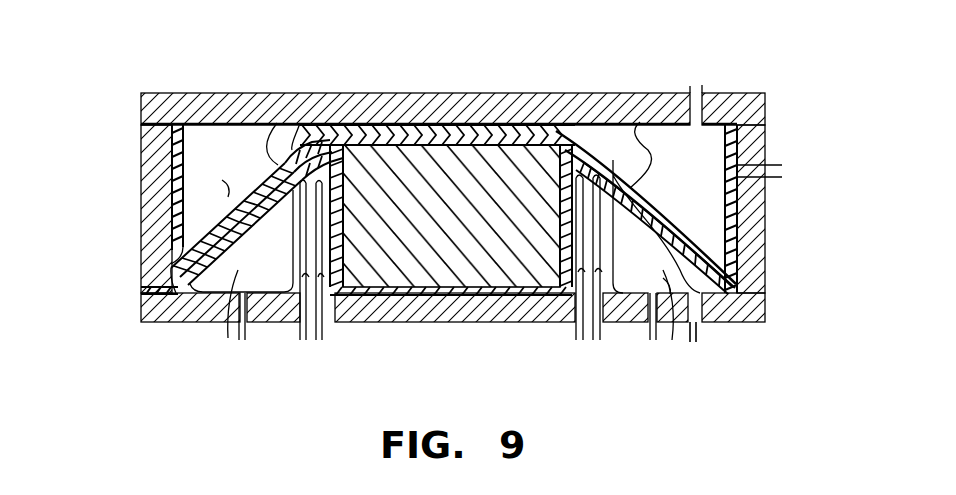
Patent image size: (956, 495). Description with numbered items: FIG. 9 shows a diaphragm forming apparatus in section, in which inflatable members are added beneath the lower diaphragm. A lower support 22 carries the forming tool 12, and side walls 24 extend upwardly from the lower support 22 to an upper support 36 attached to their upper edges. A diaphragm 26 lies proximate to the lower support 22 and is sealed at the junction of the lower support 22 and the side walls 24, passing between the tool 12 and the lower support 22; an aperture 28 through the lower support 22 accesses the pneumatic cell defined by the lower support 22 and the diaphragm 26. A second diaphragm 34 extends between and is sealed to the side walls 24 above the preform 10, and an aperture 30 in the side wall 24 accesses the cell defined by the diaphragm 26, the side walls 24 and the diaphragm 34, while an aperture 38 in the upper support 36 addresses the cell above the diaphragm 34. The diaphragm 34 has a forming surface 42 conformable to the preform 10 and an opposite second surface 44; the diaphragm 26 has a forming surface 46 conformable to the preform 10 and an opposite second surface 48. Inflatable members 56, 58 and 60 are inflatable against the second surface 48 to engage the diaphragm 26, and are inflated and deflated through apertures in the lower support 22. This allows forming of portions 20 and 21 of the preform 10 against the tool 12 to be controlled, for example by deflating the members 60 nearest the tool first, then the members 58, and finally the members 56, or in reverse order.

The preform 10 is at (425, 122).
The forming tool 12 is at (508, 172).
The portion of preform 20 is at (280, 122).
The portion of preform 21 is at (641, 122).
The lower support 22 is at (727, 324).
The side walls 24 is at (148, 203).
The diaphragm 26 is at (200, 328).
The aperture 28 is at (703, 344).
The aperture 30 is at (782, 172).
The diaphragm 34 is at (227, 194).
The upper support 36 is at (366, 93).
The aperture 38 is at (694, 85).
The forming surface 42 is at (665, 223).
The second surface 44 is at (662, 193).
The forming surface 46 is at (700, 246).
The second surface 48 is at (620, 324).
The inflatable member 56 is at (227, 322).
The inflatable member 58 is at (312, 324).
The inflatable member 60 is at (336, 324).